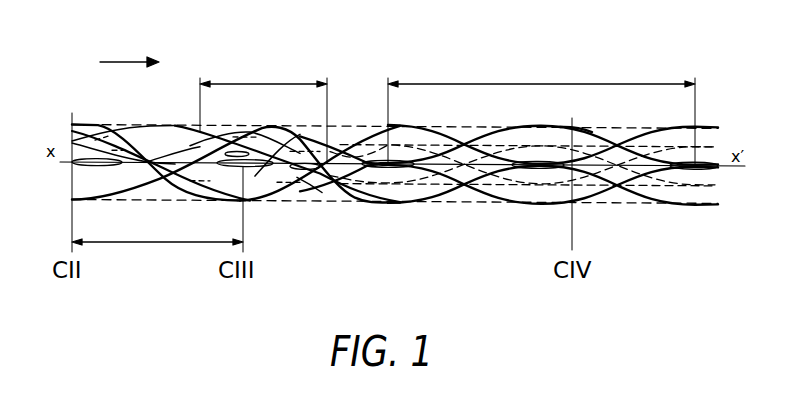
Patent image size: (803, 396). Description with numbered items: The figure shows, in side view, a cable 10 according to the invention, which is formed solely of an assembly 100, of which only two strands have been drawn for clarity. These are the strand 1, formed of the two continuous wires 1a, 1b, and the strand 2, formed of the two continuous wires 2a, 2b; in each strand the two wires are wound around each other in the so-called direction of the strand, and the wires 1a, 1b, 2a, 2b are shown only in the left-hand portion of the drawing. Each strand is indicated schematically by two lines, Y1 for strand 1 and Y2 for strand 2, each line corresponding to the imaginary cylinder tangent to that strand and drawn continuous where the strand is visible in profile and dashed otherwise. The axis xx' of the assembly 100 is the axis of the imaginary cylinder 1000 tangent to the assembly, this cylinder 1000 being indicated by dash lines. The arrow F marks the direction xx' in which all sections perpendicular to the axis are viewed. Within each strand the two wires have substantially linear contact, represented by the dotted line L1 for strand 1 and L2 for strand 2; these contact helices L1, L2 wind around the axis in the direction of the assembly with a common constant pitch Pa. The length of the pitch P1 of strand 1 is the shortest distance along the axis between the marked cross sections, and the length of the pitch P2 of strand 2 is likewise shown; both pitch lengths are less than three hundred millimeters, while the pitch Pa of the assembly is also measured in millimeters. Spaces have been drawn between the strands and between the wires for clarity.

The cable 10 is at (622, 122).
The strand 1 is at (532, 198).
The assembly 100 is at (483, 134).
The imaginary cylinder 1000 is at (176, 125).
The continuous wire 1a is at (207, 189).
The continuous wire 1b is at (238, 178).
The strand 2 is at (585, 128).
The continuous wire 2a is at (256, 130).
The continuous wire 2b is at (273, 151).
The line indicating strand 1 Y1 is at (347, 128).
The line indicating strand 2 Y2 is at (636, 225).
The contact helix L1 is at (506, 200).
The contact helix L2 is at (550, 142).
The pitch of the strand 1 P1 is at (322, 194).
The pitch of the strand 2 P2 is at (263, 111).
The pitch of the assembly Pa is at (541, 113).
The arrow indicating viewing direction F is at (129, 52).